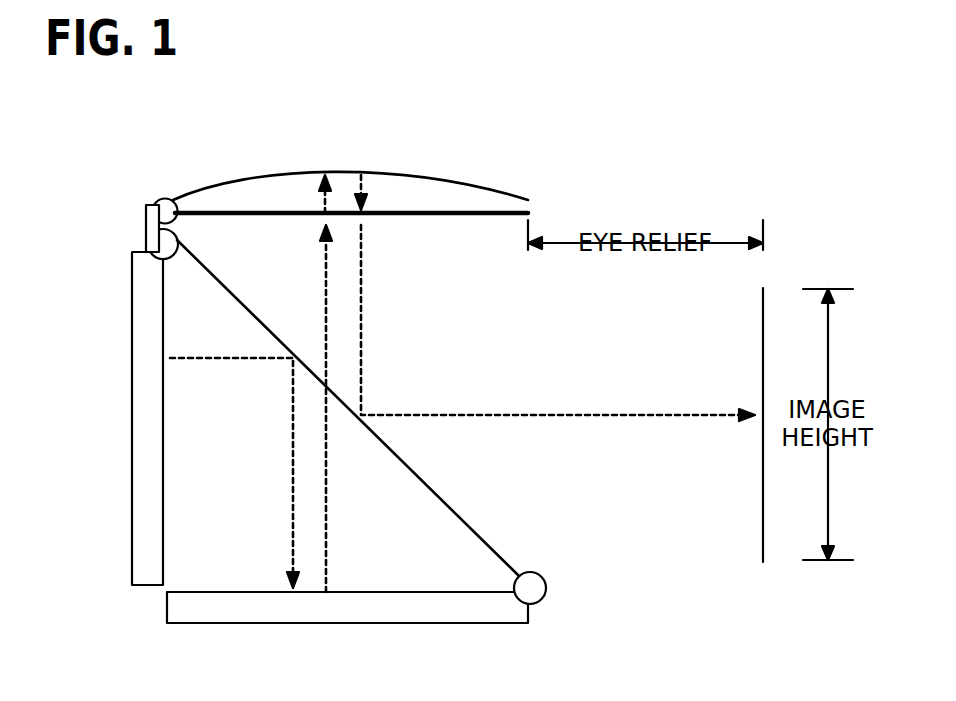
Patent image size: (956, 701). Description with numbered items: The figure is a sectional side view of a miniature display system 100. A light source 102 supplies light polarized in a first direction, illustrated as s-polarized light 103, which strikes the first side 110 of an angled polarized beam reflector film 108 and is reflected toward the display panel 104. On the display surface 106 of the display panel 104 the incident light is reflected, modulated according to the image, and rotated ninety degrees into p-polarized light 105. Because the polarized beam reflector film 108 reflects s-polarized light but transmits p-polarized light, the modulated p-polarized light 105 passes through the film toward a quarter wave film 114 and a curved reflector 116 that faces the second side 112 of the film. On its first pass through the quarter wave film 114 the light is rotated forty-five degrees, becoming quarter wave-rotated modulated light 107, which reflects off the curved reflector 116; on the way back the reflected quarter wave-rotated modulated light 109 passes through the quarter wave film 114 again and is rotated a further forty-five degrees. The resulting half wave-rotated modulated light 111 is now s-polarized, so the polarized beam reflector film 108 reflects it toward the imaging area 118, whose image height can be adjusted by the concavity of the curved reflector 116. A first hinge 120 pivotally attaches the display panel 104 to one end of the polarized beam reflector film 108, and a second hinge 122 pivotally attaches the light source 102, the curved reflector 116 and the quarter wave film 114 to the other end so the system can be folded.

The miniature display system 100 is at (760, 120).
The light source 102 is at (143, 545).
The s-polarized light 103 is at (263, 358).
The display panel 104 is at (224, 610).
The p-polarized light 105 is at (326, 522).
The display surface 106 is at (257, 592).
The quarter wave-rotated modulated light 107 is at (319, 202).
The polarized beam reflector film 108 is at (423, 480).
The reflected quarter wave-rotated modulated light 109 is at (363, 187).
The first side 110 is at (456, 553).
The half wave-rotated modulated light 111 is at (362, 331).
The second side 112 is at (508, 522).
The quarter wave film 114 is at (397, 215).
The curved reflector 116 is at (478, 182).
The imaging area 118 is at (763, 378).
The first hinge 120 is at (537, 576).
The second hinge 122 is at (120, 197).